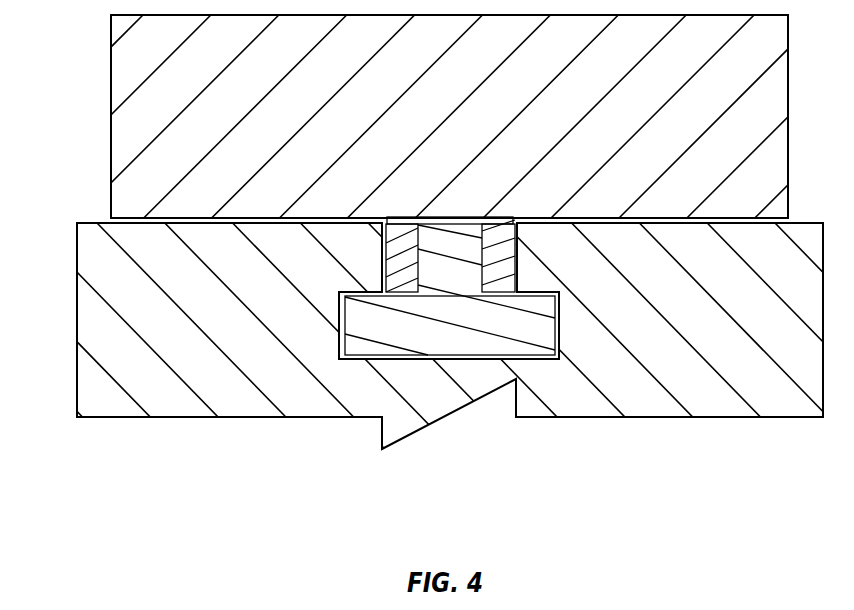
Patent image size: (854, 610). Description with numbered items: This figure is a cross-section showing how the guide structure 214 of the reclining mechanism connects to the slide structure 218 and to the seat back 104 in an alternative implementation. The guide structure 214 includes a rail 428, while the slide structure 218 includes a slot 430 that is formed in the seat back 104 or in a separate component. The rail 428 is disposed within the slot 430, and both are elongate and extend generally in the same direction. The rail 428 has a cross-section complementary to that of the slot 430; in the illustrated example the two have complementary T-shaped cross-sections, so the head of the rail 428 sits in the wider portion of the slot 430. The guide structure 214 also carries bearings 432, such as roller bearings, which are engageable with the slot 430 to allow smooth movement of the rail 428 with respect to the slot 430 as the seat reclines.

The guide structure 214 is at (111, 147).
The seat back 104 is at (78, 383).
The bearings 432 is at (392, 270).
The rail 428 is at (350, 326).
The slide structure 218 is at (533, 372).
The slot 430 is at (553, 360).